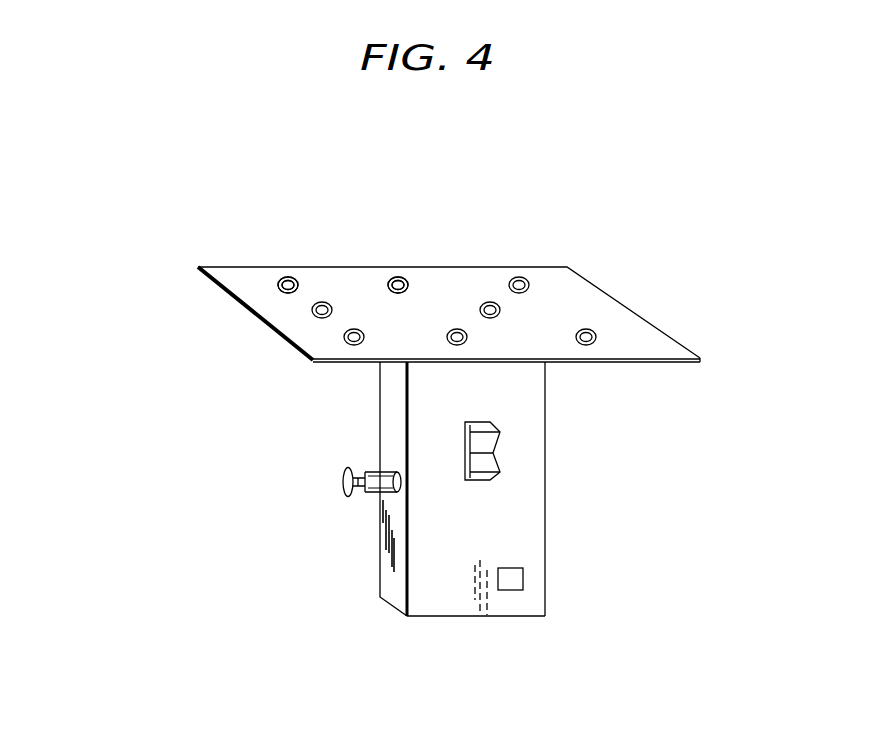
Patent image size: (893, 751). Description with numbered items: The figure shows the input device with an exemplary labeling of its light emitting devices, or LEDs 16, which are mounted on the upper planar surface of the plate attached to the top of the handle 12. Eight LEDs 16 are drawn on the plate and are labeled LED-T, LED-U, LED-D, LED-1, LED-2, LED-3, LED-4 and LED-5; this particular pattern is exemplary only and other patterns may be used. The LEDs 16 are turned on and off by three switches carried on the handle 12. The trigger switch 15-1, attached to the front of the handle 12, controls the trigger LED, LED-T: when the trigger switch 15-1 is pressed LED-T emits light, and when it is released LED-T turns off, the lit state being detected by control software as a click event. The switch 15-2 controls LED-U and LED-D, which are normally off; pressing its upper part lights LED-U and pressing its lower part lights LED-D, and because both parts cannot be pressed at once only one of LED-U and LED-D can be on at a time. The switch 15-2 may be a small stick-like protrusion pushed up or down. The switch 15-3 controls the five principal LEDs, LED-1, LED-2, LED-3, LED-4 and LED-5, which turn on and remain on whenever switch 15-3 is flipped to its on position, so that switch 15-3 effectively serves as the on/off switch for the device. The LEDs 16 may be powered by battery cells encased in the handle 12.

The handle 12 is at (387, 570).
The light emitting devices (LEDs) 16 is at (387, 273).
The trigger switch 15-1 is at (380, 470).
The switch 15-2 is at (500, 462).
The switch 15-3 is at (523, 578).
The element LED-U is at (278, 285).
The element LED-D is at (344, 337).
The element LED-1 is at (312, 310).
The element LED-2 is at (398, 277).
The element LED-3 is at (519, 277).
The element LED-4 is at (586, 345).
The element LED-5 is at (457, 345).
The trigger LED LED-T is at (500, 310).